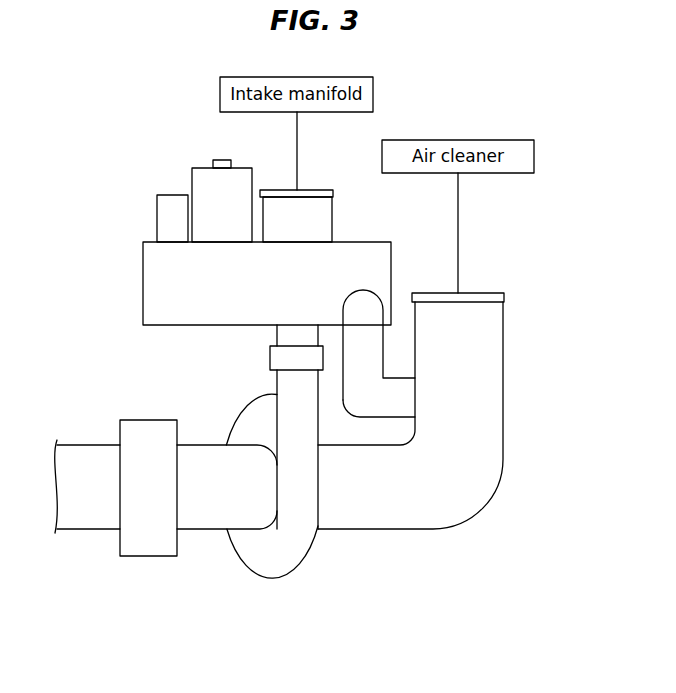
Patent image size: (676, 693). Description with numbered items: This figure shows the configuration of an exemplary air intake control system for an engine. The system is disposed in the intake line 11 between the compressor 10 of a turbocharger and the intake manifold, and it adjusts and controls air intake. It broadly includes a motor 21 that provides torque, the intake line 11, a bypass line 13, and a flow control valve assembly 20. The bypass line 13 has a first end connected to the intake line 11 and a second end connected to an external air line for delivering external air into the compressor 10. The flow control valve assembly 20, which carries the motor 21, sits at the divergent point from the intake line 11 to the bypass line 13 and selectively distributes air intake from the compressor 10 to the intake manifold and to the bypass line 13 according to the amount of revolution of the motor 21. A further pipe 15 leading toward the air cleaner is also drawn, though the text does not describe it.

The compressor 10 is at (262, 567).
The intake line 11 is at (287, 386).
The bypass line 13 is at (366, 346).
The air cleaner side pipe 15 is at (493, 322).
The flow control valve assembly 20 is at (138, 168).
The motor 21 is at (201, 173).